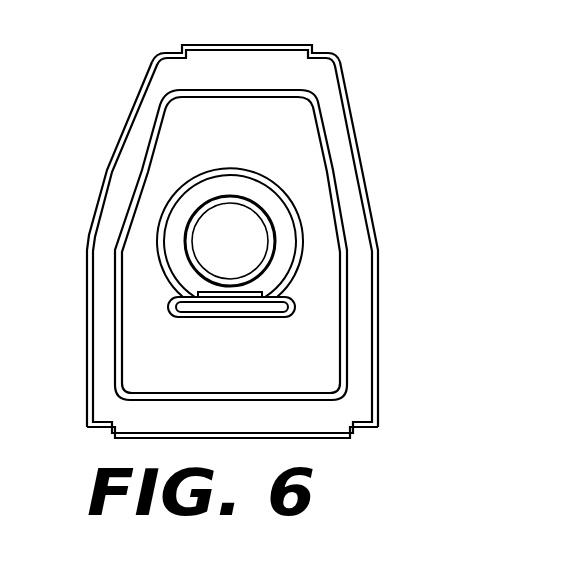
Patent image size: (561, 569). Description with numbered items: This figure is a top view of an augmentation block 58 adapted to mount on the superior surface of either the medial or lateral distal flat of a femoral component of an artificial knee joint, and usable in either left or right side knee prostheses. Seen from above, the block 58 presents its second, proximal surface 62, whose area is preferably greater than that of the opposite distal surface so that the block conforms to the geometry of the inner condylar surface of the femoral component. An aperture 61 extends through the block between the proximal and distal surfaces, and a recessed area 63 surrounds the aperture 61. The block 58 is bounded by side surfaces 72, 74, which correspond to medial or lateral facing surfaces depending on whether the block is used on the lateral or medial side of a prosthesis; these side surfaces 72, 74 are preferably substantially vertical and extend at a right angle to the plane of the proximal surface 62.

The augmentation block 58 is at (378, 147).
The side surface 72 is at (86, 268).
The side surface 74 is at (380, 232).
The recessed area 63 is at (240, 190).
The aperture 61 is at (240, 250).
The proximal surface 62 is at (331, 323).